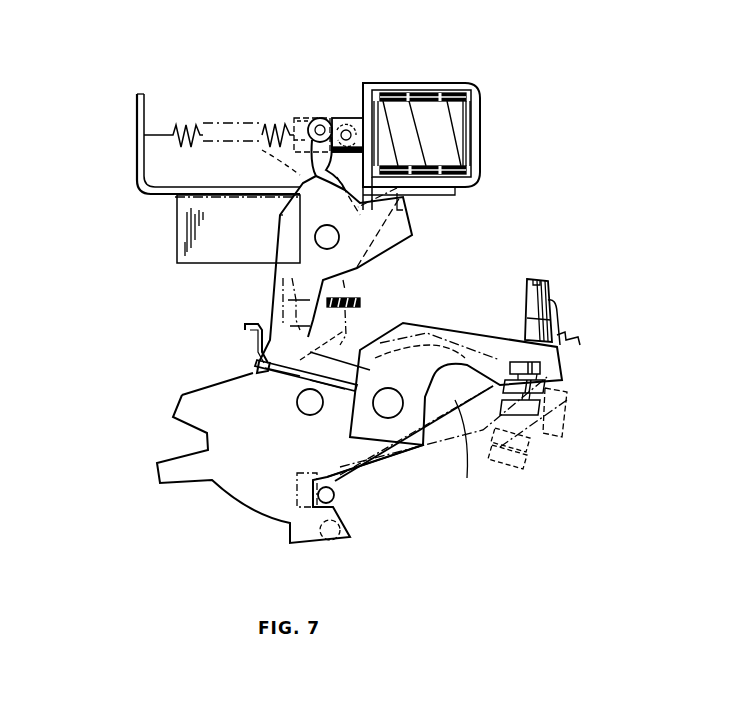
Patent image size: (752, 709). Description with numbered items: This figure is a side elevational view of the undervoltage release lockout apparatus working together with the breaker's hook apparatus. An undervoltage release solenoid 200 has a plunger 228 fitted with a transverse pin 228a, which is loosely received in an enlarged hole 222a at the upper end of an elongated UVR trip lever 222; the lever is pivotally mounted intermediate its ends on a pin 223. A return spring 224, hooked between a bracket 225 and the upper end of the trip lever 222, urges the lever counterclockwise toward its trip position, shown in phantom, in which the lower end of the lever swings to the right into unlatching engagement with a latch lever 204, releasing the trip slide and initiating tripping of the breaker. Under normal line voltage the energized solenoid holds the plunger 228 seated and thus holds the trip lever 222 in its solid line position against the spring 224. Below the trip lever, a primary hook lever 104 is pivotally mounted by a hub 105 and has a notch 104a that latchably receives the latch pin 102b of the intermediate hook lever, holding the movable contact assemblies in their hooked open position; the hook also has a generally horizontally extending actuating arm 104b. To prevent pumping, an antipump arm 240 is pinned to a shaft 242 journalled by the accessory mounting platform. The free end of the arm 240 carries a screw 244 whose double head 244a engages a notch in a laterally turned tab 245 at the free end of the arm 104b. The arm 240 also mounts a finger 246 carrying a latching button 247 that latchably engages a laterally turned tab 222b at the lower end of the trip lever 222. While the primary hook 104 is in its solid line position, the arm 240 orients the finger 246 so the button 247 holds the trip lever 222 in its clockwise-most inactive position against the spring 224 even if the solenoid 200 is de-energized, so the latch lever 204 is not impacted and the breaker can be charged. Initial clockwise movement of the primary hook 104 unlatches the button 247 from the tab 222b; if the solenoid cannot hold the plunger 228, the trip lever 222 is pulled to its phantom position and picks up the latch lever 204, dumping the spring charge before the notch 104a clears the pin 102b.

The bracket 225 is at (138, 112).
The return spring 224 is at (180, 124).
The transverse pin 228a is at (318, 118).
The plunger 228 is at (340, 118).
The undervoltage release solenoid 200 is at (450, 158).
The enlarged hole 222a is at (390, 128).
The UVR trip lever 222 is at (412, 232).
The pin 223 is at (316, 234).
The latch lever 204 is at (366, 292).
The antipump arm 240 is at (450, 333).
The shaft 242 is at (417, 444).
The screw 244 is at (550, 292).
The double head 244a is at (548, 393).
The laterally turned tab 245 is at (560, 421).
The primary hook lever 104 is at (290, 460).
The hub 105 is at (302, 410).
The notch 104a is at (318, 481).
The latch pin 102b is at (334, 497).
The actuating arm 104b is at (474, 448).
The finger 246 is at (250, 330).
The latching button 247 is at (290, 385).
The laterally turned tab 222b is at (260, 375).